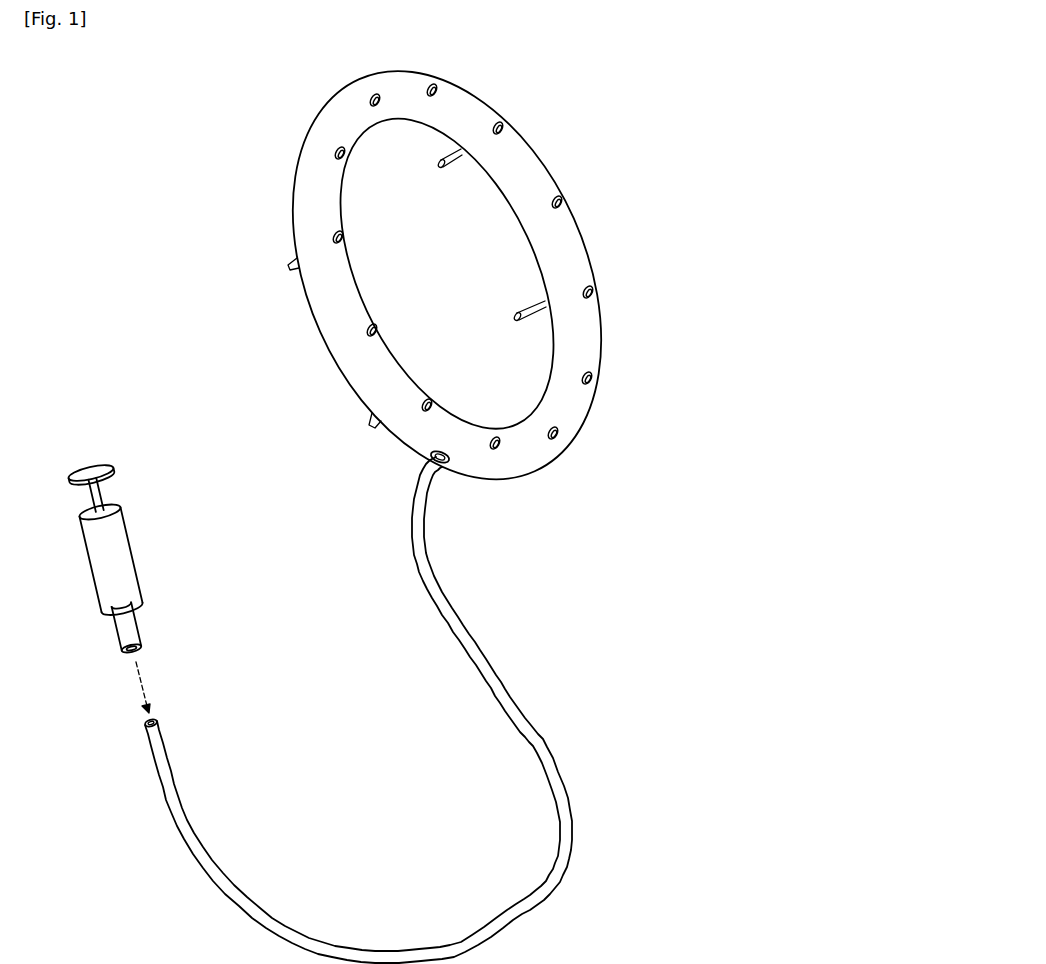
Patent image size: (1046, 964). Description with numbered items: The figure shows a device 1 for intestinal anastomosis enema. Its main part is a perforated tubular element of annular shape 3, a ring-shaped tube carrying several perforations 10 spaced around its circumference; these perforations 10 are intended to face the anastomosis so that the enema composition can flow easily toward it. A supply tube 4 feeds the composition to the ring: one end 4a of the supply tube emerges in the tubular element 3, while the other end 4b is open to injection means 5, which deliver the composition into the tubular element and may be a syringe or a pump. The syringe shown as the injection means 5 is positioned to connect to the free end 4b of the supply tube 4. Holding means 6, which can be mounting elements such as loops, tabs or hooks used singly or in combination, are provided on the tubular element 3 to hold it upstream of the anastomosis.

The device for intestinal anastomosis enema 1 is at (201, 337).
The perforated tubular element of annular shape 3 is at (589, 420).
The supply tube 4 is at (514, 701).
The end of the supply tube emerging in the tubular element 4a is at (442, 467).
The end of the supply tube open to the injection means 4b is at (163, 722).
The injection means 5 is at (138, 550).
The holding means 6 is at (438, 170).
The perforations 10 is at (594, 290).